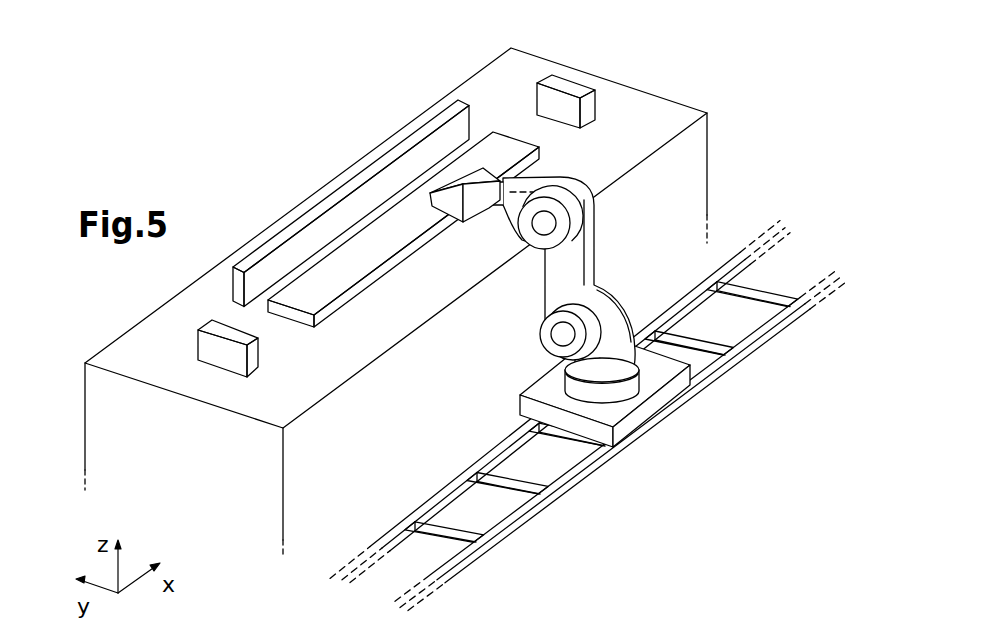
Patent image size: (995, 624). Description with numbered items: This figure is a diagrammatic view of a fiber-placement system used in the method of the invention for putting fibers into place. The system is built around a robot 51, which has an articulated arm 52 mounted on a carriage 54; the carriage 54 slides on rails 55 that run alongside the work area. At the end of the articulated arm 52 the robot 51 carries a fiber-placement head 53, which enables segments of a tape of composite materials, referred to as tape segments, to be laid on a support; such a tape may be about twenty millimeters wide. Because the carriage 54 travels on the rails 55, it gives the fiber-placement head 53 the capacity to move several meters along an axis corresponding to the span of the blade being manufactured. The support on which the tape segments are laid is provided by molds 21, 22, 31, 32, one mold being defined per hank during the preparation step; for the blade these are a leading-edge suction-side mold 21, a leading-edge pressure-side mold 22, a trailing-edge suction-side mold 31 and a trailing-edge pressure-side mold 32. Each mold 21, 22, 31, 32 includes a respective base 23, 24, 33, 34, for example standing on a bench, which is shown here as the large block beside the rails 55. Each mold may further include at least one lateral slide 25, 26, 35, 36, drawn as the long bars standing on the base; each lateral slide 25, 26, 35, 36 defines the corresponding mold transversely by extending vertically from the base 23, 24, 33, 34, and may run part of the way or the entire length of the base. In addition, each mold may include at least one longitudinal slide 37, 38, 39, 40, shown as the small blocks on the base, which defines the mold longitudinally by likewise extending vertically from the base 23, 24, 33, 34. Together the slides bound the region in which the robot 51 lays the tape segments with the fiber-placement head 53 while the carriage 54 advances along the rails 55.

The leading-edge suction-side mold 21 is at (390, 302).
The leading-edge pressure-side mold 22 is at (390, 302).
The trailing-edge suction-side mold 31 is at (390, 302).
The trailing-edge pressure-side mold 32 is at (222, 152).
The base 23 is at (403, 280).
The base 24 is at (403, 280).
The base 33 is at (403, 280).
The base 34 is at (330, 310).
The lateral slide 25 is at (351, 170).
The lateral slide 26 is at (351, 170).
The lateral slide 35 is at (351, 170).
The lateral slide 36 is at (432, 127).
The longitudinal slide 37 is at (190, 398).
The longitudinal slide 38 is at (224, 354).
The longitudinal slide 39 is at (597, 64).
The longitudinal slide 40 is at (573, 88).
The robot 51 is at (430, 302).
The articulated arm 52 is at (580, 273).
The fiber-placement head 53 is at (452, 182).
The carriage 54 is at (667, 402).
The rails 55 is at (733, 343).